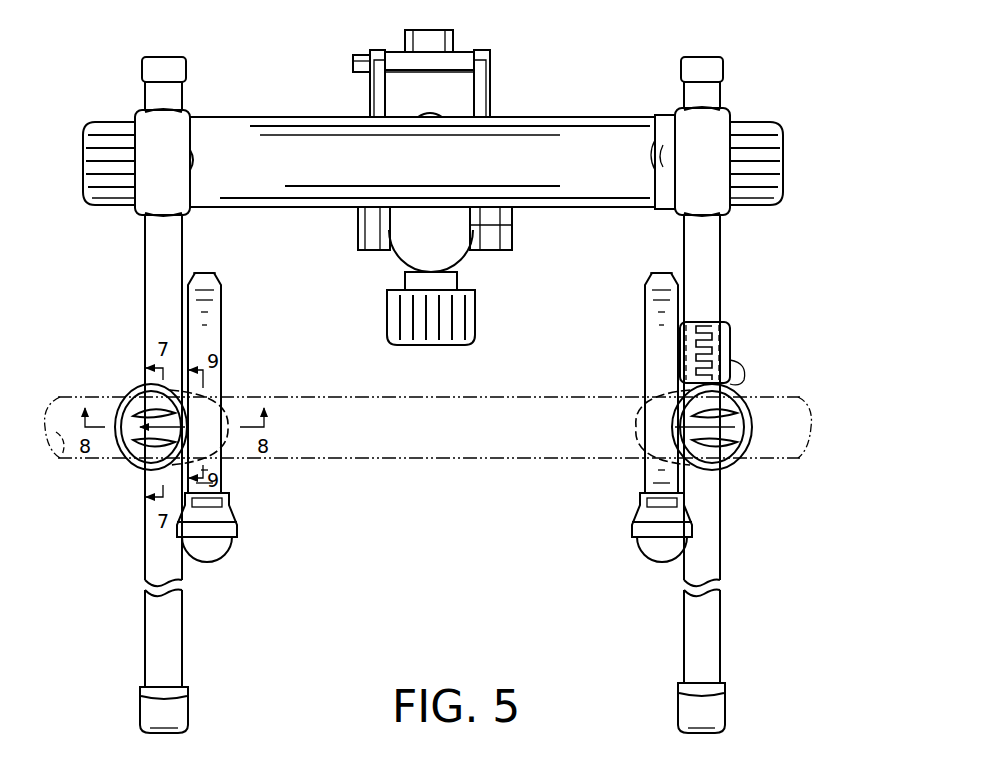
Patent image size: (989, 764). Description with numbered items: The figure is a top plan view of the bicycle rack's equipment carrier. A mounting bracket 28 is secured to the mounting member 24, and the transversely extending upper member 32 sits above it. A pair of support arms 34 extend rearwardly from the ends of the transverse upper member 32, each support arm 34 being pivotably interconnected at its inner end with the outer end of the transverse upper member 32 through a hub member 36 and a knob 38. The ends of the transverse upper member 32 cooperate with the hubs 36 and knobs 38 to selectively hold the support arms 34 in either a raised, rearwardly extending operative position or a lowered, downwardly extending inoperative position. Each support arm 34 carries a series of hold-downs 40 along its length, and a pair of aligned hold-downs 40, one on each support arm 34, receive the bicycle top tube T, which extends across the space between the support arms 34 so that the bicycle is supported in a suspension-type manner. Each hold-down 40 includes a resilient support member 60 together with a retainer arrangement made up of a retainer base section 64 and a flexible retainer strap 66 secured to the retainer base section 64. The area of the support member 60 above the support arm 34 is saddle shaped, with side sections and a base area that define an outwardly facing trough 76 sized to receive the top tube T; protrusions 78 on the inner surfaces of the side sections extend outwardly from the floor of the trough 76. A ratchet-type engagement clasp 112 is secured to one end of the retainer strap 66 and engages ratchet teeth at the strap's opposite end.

The mounting member 24 is at (457, 42).
The mounting bracket 28 is at (495, 103).
The transverse upper member 32 is at (297, 113).
The support arm 34 is at (142, 277).
The hub member 36 is at (152, 125).
The knob 38 is at (82, 137).
The hold-down 40 is at (122, 492).
The resilient support member 60 is at (136, 387).
The retainer base section 64 is at (226, 414).
The retainer strap 66 is at (225, 337).
The trough 76 is at (142, 425).
The protrusions 78 is at (141, 418).
The engagement clasp 112 is at (240, 540).
The top tube T is at (430, 458).